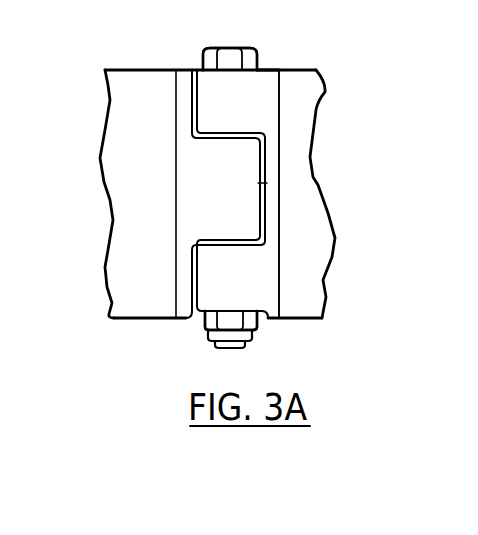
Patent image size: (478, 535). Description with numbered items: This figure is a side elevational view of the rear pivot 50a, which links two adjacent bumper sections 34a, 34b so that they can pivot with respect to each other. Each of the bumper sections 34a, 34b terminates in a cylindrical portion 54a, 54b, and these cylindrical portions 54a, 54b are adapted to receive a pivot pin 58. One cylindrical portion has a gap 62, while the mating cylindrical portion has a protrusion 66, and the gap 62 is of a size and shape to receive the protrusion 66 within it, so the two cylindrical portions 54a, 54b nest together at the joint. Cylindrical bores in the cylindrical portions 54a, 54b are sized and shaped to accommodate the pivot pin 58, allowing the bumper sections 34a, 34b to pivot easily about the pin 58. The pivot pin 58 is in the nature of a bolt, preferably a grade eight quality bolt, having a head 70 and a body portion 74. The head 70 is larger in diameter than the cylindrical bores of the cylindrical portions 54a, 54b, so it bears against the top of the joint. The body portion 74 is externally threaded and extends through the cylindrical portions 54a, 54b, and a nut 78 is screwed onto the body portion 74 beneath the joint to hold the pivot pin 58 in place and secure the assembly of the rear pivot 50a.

The bumper section 34a is at (300, 135).
The bumper section 34b is at (123, 122).
The rear pivot 50a is at (350, 227).
The cylindrical portion 54a is at (268, 107).
The cylindrical portion 54b is at (196, 209).
The pivot pin 58 is at (266, 39).
The gap 62 is at (267, 240).
The protrusion 66 is at (238, 194).
The head 70 is at (205, 58).
The body portion 74 is at (229, 349).
The nut 78 is at (204, 316).